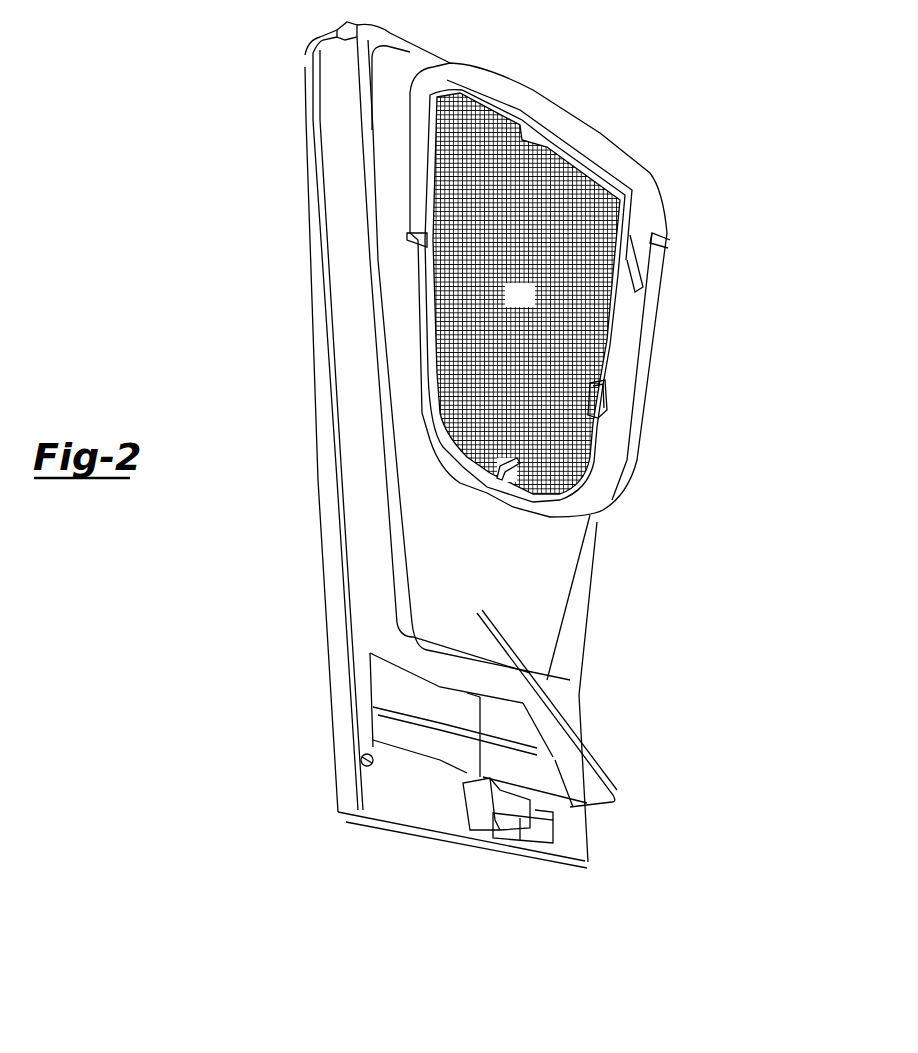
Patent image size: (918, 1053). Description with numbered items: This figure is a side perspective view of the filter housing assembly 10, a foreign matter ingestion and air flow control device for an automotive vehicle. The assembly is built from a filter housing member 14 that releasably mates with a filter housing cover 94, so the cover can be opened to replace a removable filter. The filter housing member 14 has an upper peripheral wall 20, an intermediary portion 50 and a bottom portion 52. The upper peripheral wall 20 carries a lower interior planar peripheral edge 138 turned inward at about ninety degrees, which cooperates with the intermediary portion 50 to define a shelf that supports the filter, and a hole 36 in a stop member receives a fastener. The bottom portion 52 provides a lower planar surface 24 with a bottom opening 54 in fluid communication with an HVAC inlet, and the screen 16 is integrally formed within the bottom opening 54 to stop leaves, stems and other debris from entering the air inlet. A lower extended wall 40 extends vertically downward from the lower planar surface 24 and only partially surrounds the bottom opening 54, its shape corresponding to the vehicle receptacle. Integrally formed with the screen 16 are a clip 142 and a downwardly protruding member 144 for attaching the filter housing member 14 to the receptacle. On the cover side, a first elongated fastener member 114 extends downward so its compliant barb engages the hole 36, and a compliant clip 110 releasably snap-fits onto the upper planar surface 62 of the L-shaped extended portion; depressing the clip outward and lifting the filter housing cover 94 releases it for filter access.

The filter housing assembly 10 is at (695, 211).
The filter housing member 14 is at (645, 146).
The screen 16 is at (573, 343).
The upper peripheral wall 20 is at (353, 363).
The lower planar surface 24 is at (550, 119).
The hole 36 is at (365, 760).
The lower extended wall 40 is at (647, 403).
The intermediary portion 50 is at (387, 298).
The bottom portion 52 is at (620, 317).
The bottom opening 54 is at (532, 308).
The upper planar surface 62 is at (490, 787).
The filter housing cover 94 is at (317, 590).
The compliant clip 110 is at (527, 827).
The first elongated fastener member 114 is at (388, 760).
The lower interior planar peripheral edge 138 is at (360, 188).
The clip 142 is at (607, 400).
The downwardly protruding member 144 is at (513, 482).